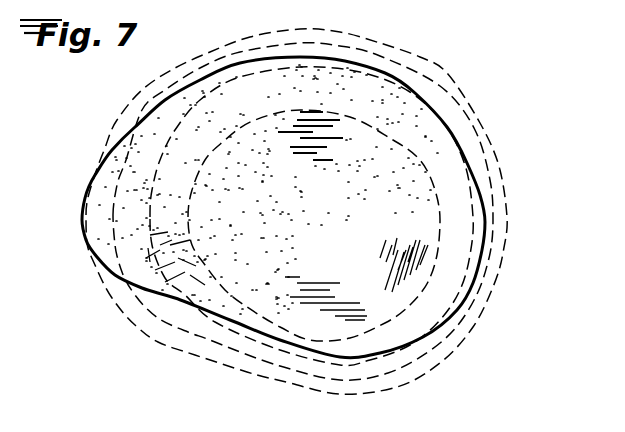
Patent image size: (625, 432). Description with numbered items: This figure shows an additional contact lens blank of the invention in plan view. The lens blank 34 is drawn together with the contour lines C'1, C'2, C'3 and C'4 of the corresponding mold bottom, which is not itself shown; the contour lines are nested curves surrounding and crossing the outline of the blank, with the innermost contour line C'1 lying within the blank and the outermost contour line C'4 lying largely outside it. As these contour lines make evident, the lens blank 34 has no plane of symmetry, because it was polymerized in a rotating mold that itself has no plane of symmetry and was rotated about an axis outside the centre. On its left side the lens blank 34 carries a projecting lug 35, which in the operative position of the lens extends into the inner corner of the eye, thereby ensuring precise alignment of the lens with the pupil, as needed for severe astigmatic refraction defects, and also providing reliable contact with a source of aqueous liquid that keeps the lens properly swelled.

The lens blank 34 is at (435, 155).
The projecting lug 35 is at (100, 202).
The contour line C'1 is at (314, 225).
The contour line C'2 is at (311, 216).
The contour line C'3 is at (303, 211).
The contour line C'4 is at (296, 211).